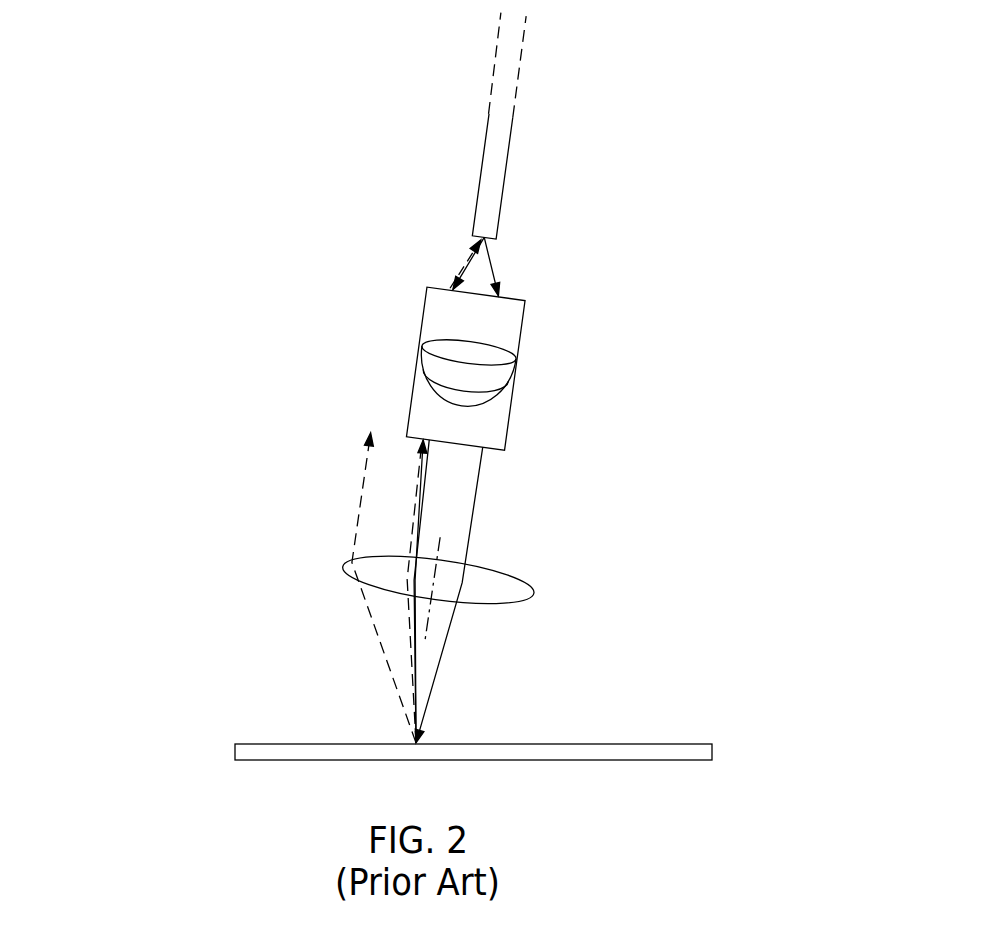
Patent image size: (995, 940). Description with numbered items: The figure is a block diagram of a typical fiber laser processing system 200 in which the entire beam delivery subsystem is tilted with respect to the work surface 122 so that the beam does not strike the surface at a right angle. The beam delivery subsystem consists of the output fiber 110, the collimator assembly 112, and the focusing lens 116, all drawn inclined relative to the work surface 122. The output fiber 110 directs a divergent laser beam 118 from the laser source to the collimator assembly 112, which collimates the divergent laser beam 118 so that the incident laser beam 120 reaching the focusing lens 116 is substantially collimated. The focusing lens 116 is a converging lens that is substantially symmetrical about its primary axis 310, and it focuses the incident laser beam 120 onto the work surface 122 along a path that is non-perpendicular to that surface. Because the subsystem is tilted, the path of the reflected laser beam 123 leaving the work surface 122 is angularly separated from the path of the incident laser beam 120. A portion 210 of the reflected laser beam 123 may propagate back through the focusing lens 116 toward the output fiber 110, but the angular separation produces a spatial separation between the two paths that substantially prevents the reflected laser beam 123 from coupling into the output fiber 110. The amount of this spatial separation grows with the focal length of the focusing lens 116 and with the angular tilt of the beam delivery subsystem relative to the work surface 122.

The fiber laser processing system 200 is at (300, 148).
The output fiber 110 is at (504, 181).
The divergent laser beam 118 is at (488, 260).
The portion of the reflected laser beam 210 is at (453, 268).
The collimator assembly 112 is at (516, 350).
The incident laser beam 120 is at (480, 477).
The primary axis 310 is at (443, 535).
The focusing lens 116 is at (510, 572).
The reflected laser beam 123 is at (373, 637).
The work surface 122 is at (315, 743).